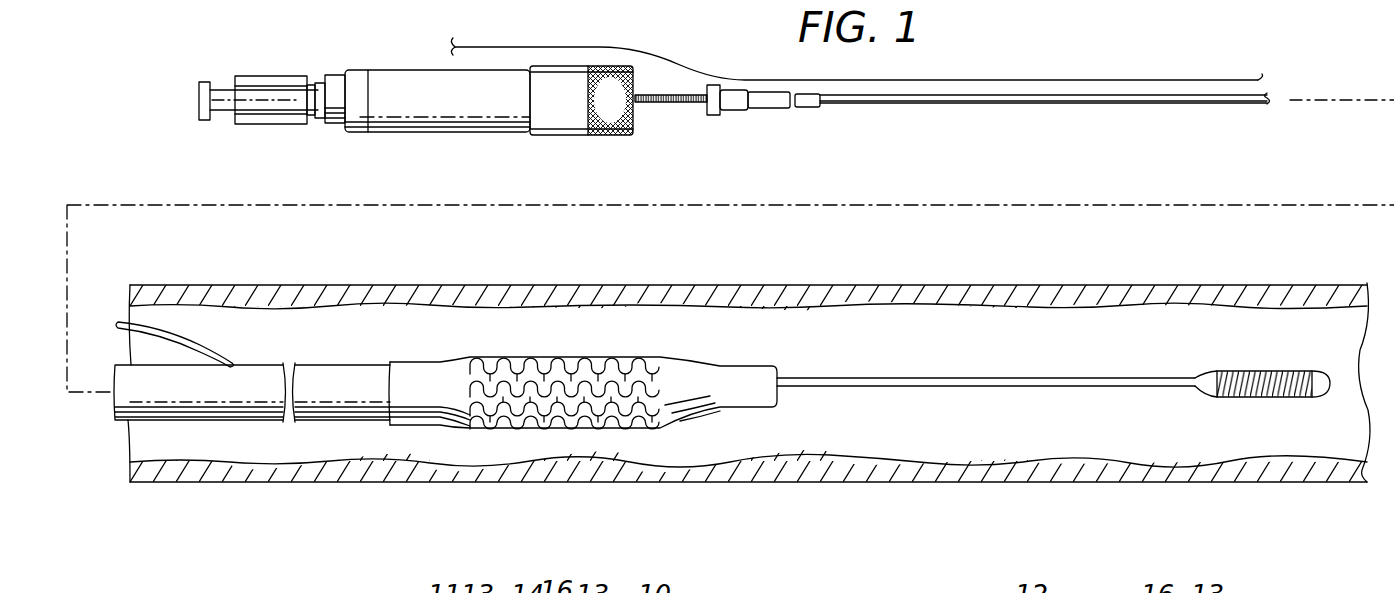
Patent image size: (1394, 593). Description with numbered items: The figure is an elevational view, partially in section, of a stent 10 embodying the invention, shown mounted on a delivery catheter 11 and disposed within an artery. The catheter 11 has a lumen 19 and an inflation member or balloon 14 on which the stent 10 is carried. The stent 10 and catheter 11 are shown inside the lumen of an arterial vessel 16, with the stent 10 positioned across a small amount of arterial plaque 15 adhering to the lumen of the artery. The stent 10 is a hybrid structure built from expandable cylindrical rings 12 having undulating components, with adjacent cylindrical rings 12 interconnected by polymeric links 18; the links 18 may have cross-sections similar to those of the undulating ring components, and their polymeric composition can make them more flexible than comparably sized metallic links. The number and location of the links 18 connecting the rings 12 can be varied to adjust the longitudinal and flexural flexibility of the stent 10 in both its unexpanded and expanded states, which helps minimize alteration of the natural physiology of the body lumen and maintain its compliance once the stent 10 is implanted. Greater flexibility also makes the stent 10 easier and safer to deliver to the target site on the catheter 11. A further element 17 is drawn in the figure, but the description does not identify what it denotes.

The stent 10 is at (465, 402).
The catheter 11 is at (1134, 104).
The cylindrical rings 12 is at (607, 376).
The inflation member (balloon) 14 is at (420, 400).
The arterial plaque 15 is at (893, 460).
The arterial vessel 16 is at (968, 302).
The stent ring element 17 is at (477, 405).
The polymeric links 18 is at (512, 398).
The lumen 19 is at (163, 328).